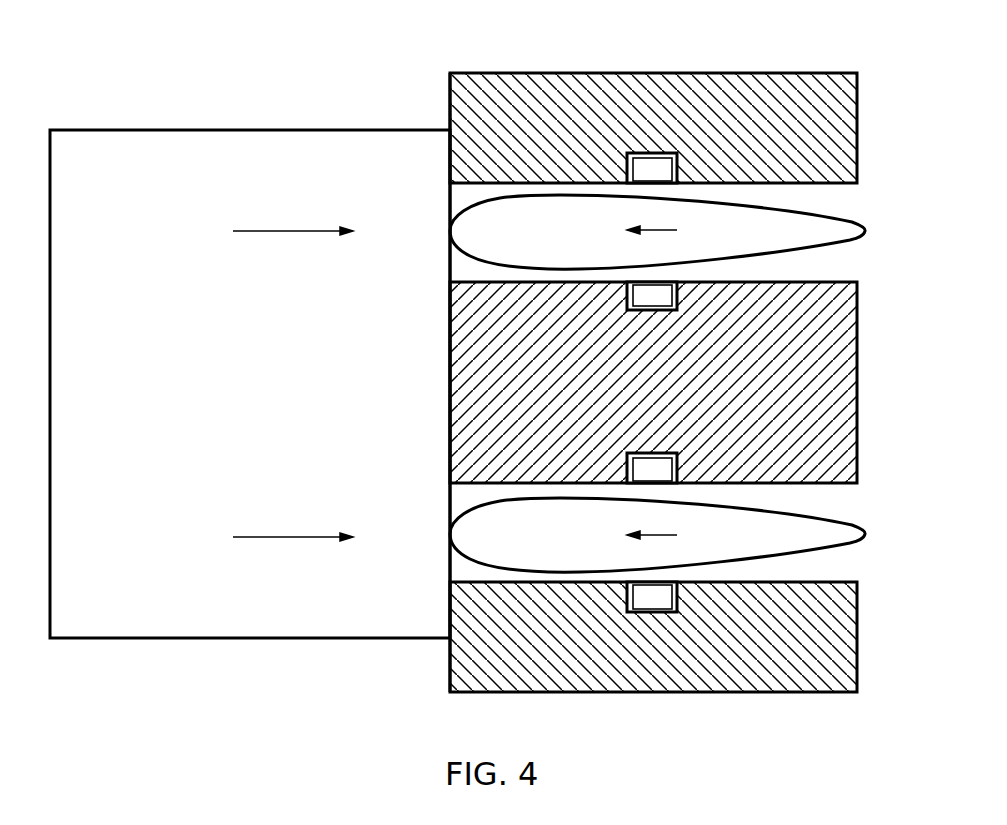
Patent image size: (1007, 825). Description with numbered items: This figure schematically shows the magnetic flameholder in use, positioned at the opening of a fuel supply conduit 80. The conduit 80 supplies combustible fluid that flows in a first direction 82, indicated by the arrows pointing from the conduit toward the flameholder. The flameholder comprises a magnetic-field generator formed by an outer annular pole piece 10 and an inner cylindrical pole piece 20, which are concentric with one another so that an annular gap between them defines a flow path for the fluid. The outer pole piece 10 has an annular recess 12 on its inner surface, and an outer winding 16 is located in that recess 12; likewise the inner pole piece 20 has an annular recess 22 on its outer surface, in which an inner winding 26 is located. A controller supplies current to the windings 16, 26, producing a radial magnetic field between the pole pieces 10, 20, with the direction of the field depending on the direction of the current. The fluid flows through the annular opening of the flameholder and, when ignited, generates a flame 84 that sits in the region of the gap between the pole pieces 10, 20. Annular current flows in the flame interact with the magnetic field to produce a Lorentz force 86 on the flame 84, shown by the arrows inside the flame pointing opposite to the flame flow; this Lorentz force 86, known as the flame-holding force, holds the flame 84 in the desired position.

The outer annular pole piece 10 is at (803, 73).
The annular recess 12 is at (652, 168).
The outer winding 16 is at (657, 153).
The inner cylindrical pole piece 20 is at (857, 302).
The annular recess 22 is at (680, 472).
The inner winding 26 is at (653, 472).
The fuel supply conduit 80 is at (244, 130).
The first direction 82 is at (293, 231).
The flame 84 is at (833, 233).
The Lorentz force 86 is at (660, 540).